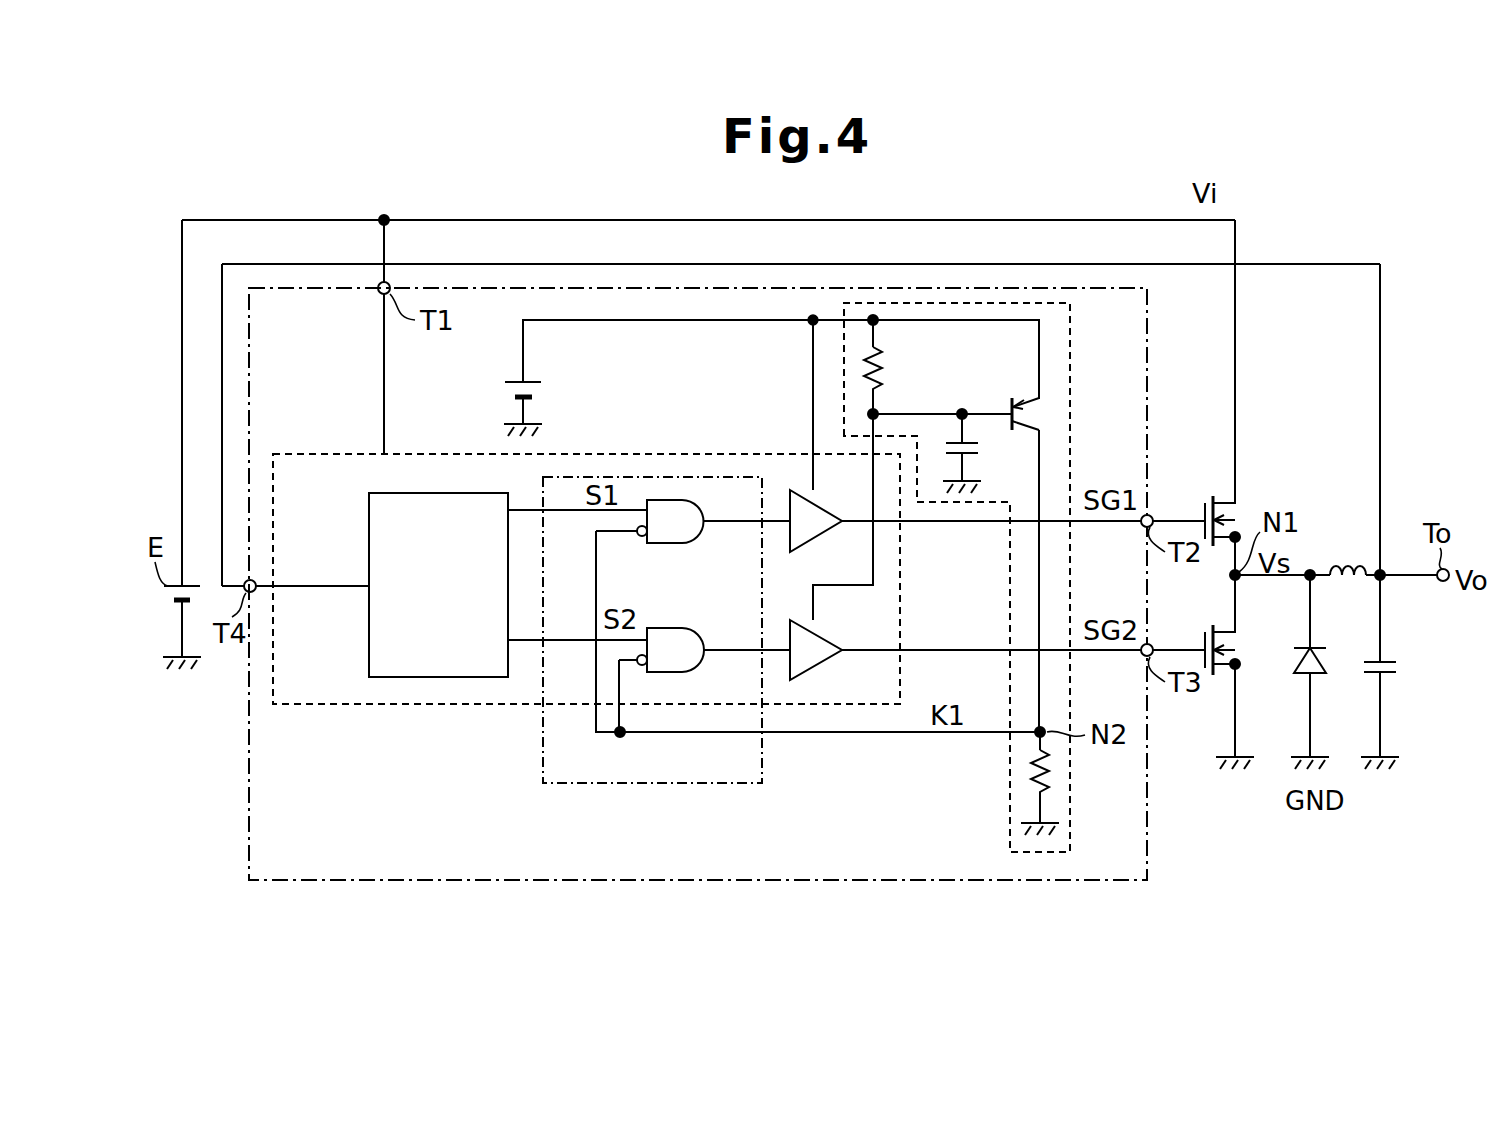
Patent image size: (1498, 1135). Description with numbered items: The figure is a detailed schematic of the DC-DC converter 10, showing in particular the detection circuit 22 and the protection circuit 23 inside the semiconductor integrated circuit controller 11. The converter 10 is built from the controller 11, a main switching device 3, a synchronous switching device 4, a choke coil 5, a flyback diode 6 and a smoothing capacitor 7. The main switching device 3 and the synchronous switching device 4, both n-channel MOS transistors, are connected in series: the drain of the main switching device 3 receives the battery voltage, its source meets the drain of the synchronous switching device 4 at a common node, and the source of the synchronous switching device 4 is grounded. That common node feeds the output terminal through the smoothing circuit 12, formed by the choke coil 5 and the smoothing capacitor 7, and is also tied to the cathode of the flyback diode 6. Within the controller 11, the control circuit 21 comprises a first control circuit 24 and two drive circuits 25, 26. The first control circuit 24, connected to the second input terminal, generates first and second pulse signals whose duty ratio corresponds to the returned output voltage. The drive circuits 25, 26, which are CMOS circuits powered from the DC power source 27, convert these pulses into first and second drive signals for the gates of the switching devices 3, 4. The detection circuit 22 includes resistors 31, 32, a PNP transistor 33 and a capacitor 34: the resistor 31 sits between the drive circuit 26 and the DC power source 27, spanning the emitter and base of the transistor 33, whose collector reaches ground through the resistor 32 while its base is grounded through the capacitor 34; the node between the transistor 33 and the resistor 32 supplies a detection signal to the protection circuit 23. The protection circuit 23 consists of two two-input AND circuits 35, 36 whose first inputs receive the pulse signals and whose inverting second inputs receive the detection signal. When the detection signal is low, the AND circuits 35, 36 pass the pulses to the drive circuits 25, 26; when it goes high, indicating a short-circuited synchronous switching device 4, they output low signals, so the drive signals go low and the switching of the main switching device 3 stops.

The main switching device 3 is at (1203, 511).
The synchronous switching device 4 is at (1203, 638).
The choke coil 5 is at (1336, 566).
The flyback diode 6 is at (1305, 674).
The smoothing capacitor 7 is at (1388, 673).
The DC-DC converter 10 is at (1406, 270).
The semiconductor integrated circuit device (controller) 11 is at (1148, 343).
The smoothing circuit 12 is at (1422, 642).
The control circuit 21 is at (641, 454).
The detection circuit 22 is at (1073, 356).
The protection circuit 23 is at (692, 784).
The first control circuit 24 is at (468, 493).
The drive circuit 25 is at (832, 506).
The drive circuit 26 is at (832, 636).
The DC power source 27 is at (515, 382).
The resistor 31 is at (881, 375).
The resistor 32 is at (1030, 758).
The PNP transistor 33 is at (1009, 405).
The capacitor 34 is at (975, 450).
The AND circuit 35 is at (655, 544).
The AND circuit 36 is at (690, 628).